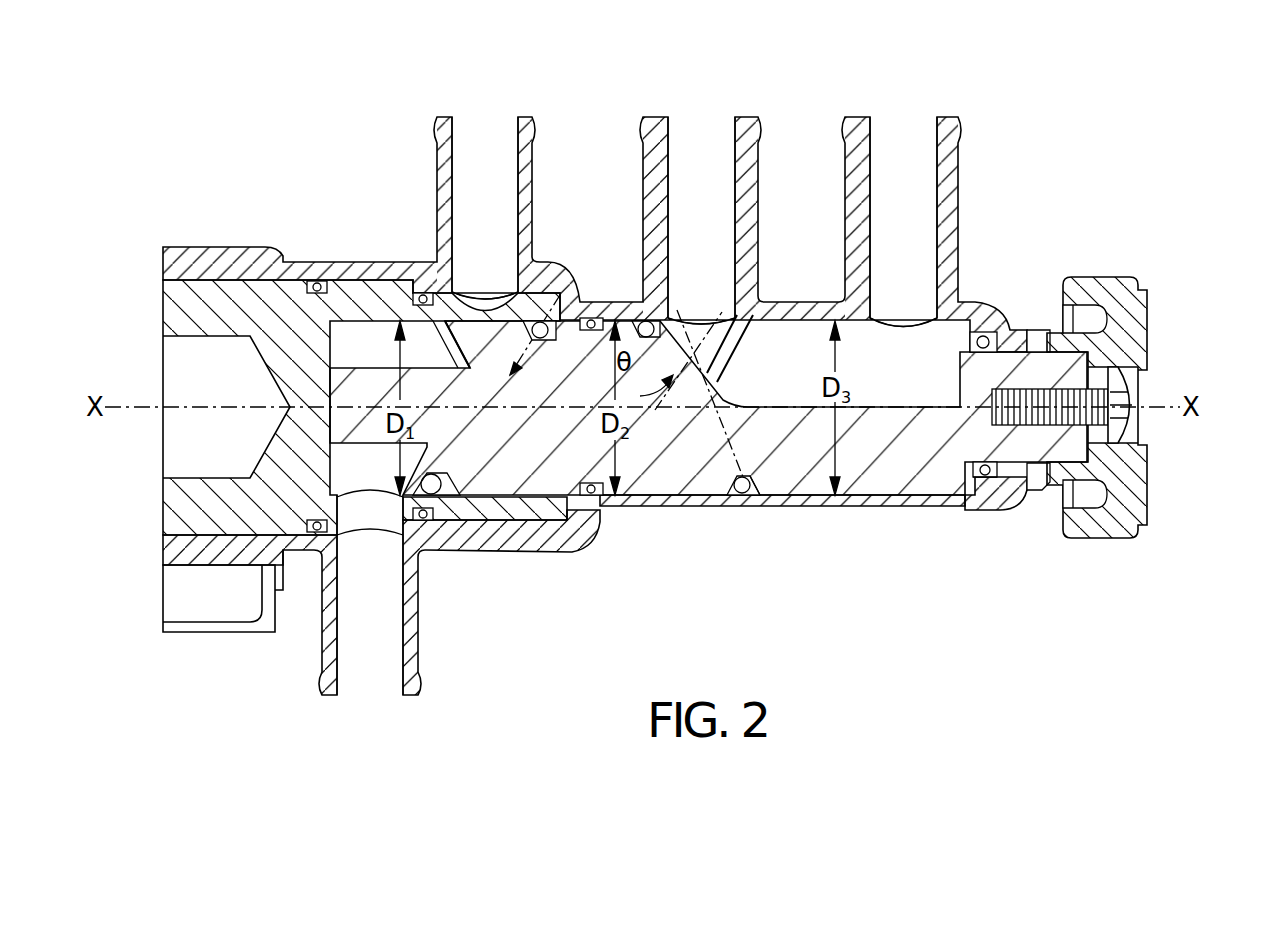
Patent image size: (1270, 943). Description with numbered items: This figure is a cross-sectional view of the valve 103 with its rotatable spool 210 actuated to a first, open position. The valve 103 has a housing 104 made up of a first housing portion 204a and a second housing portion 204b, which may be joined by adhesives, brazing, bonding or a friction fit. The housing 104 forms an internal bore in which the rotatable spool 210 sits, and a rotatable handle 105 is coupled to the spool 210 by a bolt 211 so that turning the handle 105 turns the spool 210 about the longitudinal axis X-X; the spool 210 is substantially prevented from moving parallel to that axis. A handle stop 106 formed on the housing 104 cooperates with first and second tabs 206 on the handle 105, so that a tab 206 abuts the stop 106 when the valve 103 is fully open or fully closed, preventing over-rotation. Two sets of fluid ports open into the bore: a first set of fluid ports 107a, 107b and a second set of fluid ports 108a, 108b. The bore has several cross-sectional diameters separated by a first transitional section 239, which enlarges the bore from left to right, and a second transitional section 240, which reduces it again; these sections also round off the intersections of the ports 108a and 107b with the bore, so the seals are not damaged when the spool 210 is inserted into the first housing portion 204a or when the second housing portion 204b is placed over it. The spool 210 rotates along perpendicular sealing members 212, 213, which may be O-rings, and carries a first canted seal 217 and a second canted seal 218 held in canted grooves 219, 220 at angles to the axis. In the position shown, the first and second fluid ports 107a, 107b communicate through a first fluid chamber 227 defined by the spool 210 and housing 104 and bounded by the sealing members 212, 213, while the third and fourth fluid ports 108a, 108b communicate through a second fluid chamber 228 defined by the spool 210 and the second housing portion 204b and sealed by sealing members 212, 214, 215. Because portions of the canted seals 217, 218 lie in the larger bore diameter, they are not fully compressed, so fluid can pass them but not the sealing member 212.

The valve 103 is at (1082, 88).
The housing 104 is at (503, 572).
The rotatable handle 105 is at (1125, 280).
The handle stop 106 is at (1040, 328).
The first fluid port 107a is at (957, 125).
The second fluid port 107b is at (752, 125).
The third fluid port 108a is at (530, 125).
The fourth fluid port 108b is at (418, 685).
The first housing portion 204a is at (537, 552).
The second housing portion 204b is at (168, 318).
The tab 206 is at (1000, 330).
The rotatable spool 210 is at (862, 508).
The bolt 211 is at (1137, 428).
The sealing member 212 is at (592, 500).
The sealing member 213 is at (988, 495).
The sealing member 214 is at (421, 292).
The sealing member 215 is at (315, 280).
The first canted seal 217 is at (748, 500).
The second canted seal 218 is at (548, 316).
The canted groove 219 is at (738, 498).
The canted groove 220 is at (438, 497).
The first fluid chamber 227 is at (896, 345).
The second fluid chamber 228 is at (372, 330).
The first transitional section 239 is at (466, 335).
The second transitional section 240 is at (733, 350).